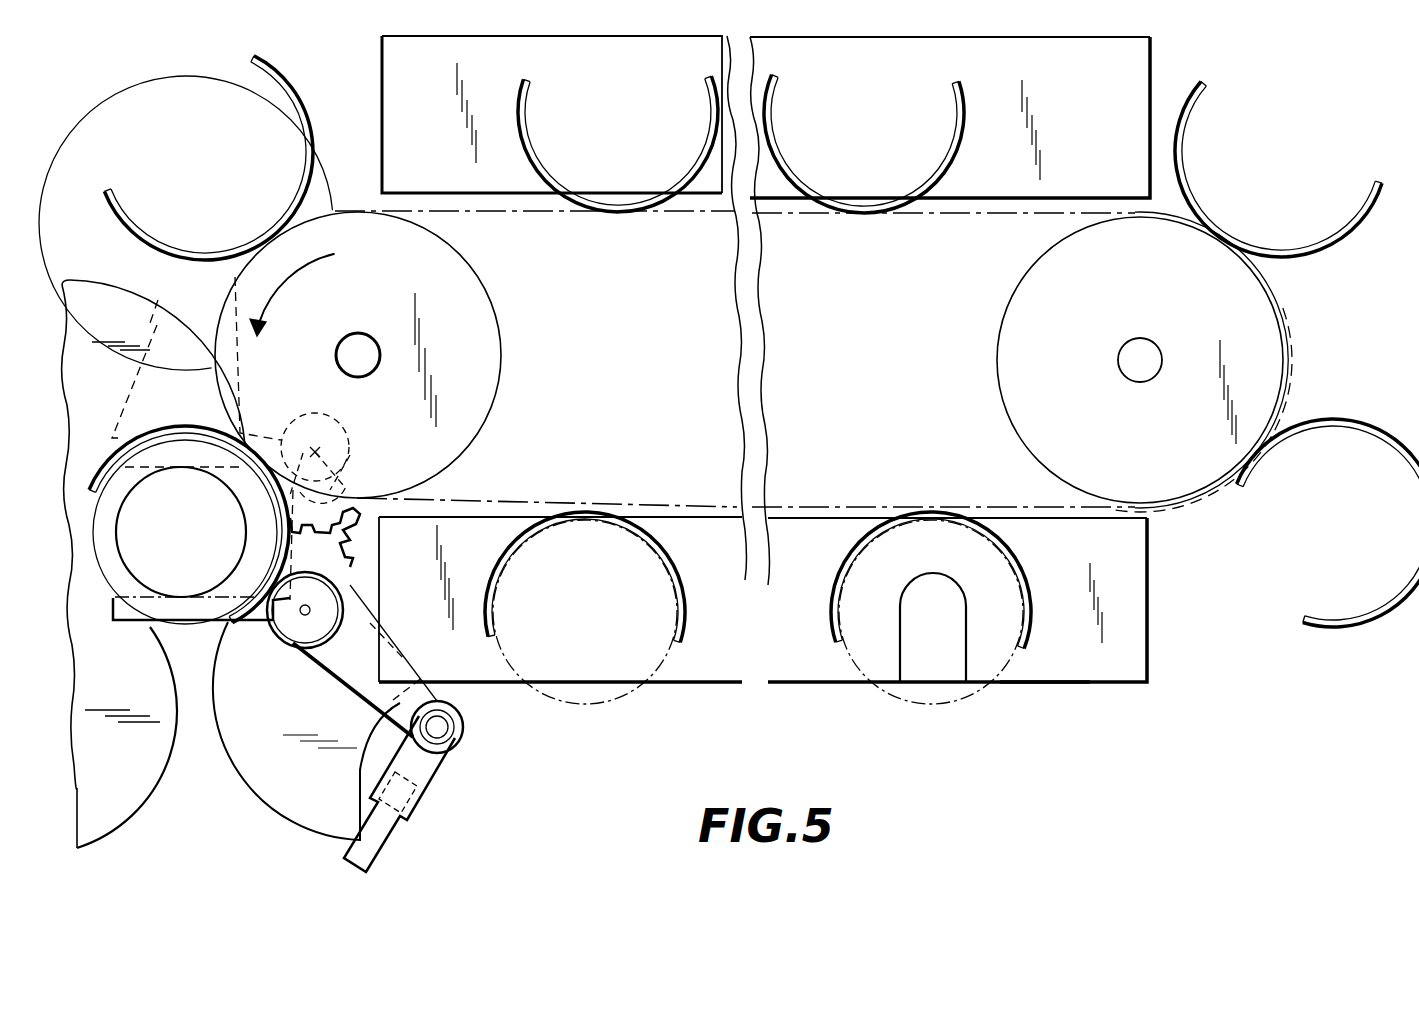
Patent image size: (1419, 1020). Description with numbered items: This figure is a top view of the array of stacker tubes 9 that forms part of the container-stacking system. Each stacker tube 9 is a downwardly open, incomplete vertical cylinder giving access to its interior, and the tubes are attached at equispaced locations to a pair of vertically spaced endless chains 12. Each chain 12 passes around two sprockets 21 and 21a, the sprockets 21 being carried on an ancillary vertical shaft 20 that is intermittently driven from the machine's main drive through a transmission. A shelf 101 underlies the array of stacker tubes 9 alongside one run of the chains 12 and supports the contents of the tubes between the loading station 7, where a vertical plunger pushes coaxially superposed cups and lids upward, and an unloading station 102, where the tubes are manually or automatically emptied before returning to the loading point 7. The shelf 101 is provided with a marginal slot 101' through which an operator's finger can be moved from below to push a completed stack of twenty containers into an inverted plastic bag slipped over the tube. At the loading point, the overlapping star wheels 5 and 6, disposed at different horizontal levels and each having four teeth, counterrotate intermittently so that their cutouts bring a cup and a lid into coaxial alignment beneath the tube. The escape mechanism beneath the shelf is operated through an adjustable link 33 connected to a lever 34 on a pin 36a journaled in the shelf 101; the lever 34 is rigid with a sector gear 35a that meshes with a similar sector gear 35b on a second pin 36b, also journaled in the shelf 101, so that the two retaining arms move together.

The star wheel 5 is at (162, 290).
The star wheel 6 is at (83, 290).
The loading station 7 is at (178, 607).
The stacker tube 9 is at (302, 102).
The endless chain 12 is at (643, 212).
The ancillary vertical shaft 20 is at (364, 342).
The sprocket 21 is at (487, 390).
The sprocket 21a is at (997, 384).
The adjustable link 33 is at (372, 851).
The lever 34 is at (350, 684).
The sector gear 35a is at (328, 573).
The sector gear 35b is at (357, 488).
The pin 36a is at (302, 615).
The pin 36b is at (348, 446).
The shelf 101 is at (957, 621).
The marginal slot 101' is at (933, 654).
The unloading station 102 is at (1014, 687).